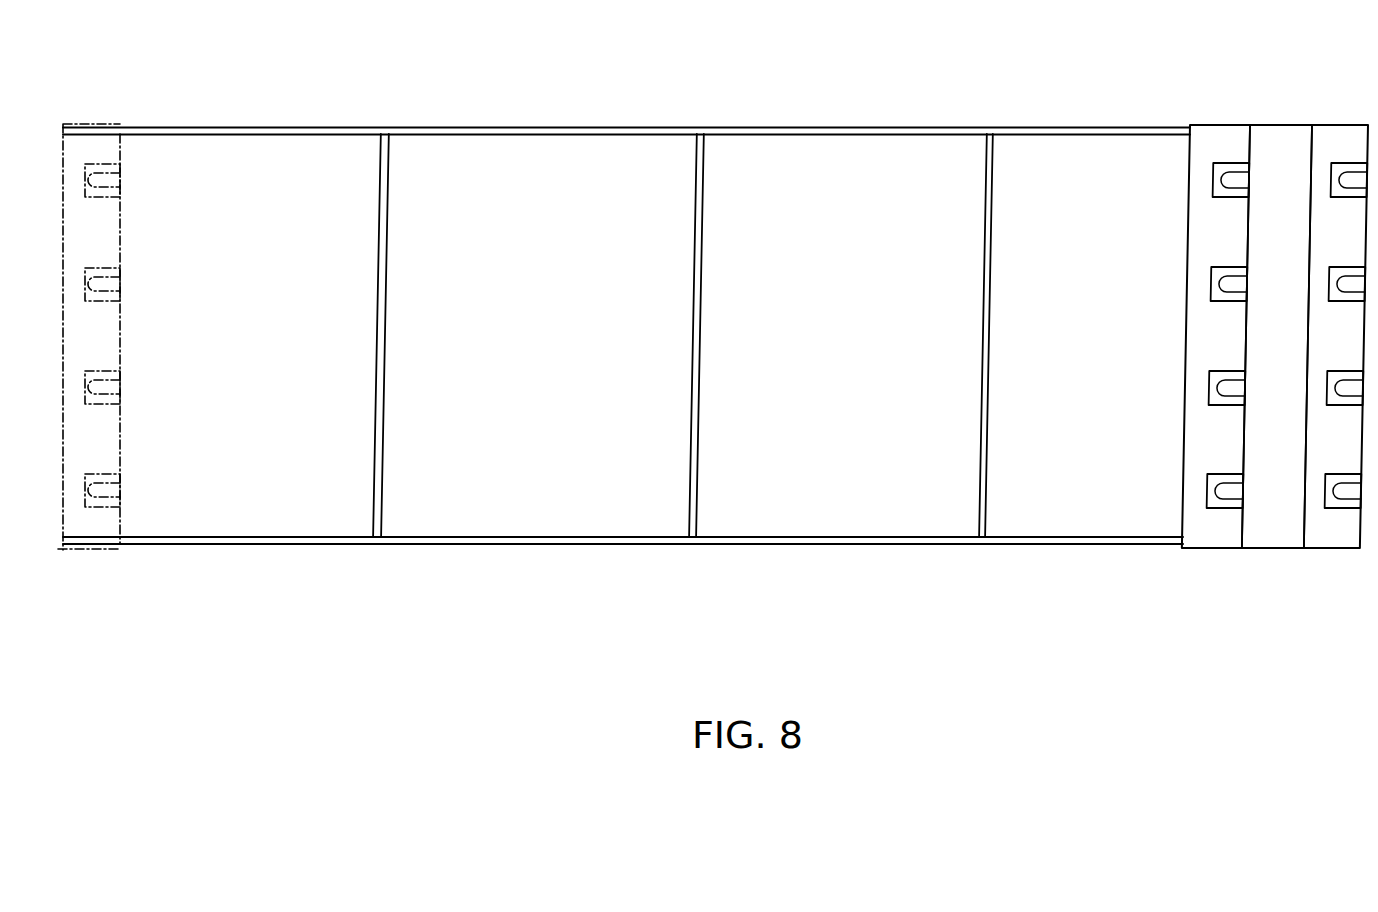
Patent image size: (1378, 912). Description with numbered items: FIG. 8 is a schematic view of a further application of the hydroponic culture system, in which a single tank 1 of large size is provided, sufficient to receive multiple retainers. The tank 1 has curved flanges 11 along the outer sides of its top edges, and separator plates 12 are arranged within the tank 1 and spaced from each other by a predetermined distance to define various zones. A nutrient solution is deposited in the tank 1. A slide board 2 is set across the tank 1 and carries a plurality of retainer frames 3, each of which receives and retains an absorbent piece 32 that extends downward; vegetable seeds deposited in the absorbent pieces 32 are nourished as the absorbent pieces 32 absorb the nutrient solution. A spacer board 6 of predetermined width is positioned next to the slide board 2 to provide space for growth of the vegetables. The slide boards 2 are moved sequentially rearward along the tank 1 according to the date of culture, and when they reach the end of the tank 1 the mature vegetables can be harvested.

The tank 1 is at (624, 334).
The curved flange 11 is at (1020, 128).
The separator plate 12 is at (697, 163).
The slide board 2 is at (1248, 339).
The retainer frame 3 is at (1249, 274).
The absorbent piece 32 is at (1237, 172).
The spacer board 6 is at (1265, 549).